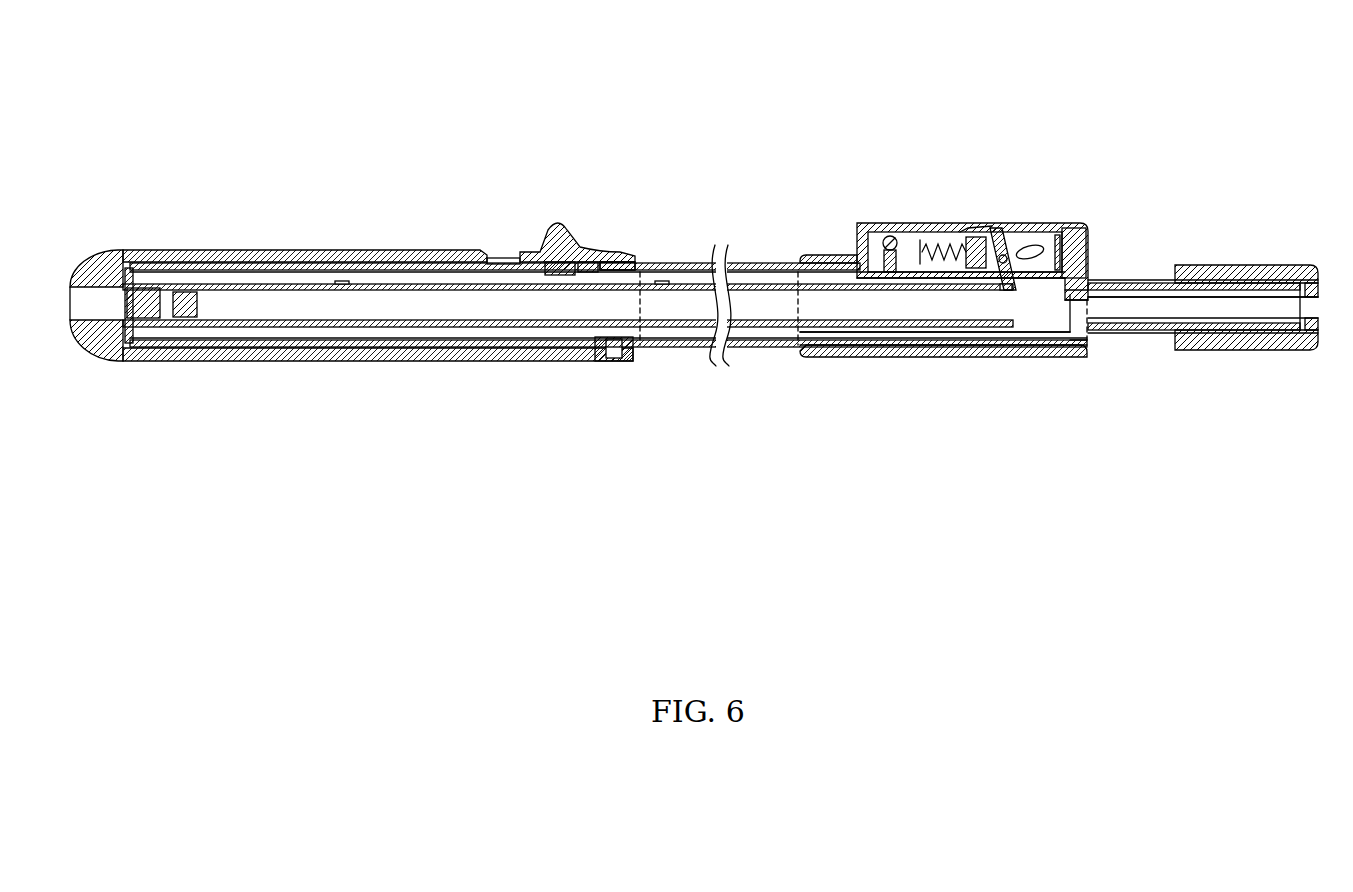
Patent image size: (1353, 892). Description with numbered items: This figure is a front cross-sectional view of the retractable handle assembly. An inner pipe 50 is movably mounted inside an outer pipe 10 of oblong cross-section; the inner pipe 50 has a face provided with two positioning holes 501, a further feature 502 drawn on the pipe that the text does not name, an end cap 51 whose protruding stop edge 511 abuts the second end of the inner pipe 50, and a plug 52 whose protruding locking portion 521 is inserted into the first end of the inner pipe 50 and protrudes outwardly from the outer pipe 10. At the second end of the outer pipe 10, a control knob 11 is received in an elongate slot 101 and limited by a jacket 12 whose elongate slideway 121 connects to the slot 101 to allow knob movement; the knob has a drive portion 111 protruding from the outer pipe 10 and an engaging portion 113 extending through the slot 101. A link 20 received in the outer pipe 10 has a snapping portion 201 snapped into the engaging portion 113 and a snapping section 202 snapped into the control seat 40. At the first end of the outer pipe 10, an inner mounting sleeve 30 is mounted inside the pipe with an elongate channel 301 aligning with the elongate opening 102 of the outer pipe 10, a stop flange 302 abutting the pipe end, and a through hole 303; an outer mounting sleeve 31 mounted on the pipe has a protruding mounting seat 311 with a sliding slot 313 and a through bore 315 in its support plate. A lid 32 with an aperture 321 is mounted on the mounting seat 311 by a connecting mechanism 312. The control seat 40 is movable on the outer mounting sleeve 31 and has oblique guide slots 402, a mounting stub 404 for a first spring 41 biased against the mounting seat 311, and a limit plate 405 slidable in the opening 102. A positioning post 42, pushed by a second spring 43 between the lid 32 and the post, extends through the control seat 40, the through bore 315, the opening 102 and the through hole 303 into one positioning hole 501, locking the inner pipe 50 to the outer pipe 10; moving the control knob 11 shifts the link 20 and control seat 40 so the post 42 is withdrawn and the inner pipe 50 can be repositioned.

The outer pipe 10 is at (670, 354).
The control knob 11 is at (557, 221).
The jacket 12 is at (305, 366).
The link 20 is at (765, 266).
The inner mounting sleeve 30 is at (812, 357).
The outer mounting sleeve 31 is at (808, 255).
The lid 32 is at (1057, 221).
The control seat 40 is at (1068, 232).
The first spring 41 is at (878, 357).
The positioning post 42 is at (1007, 221).
The second spring 43 is at (998, 221).
The inner pipe 50 is at (433, 337).
The end cap 51 is at (147, 326).
The plug 52 is at (1228, 353).
The elongate slot 101 is at (500, 258).
The elongate opening 102 is at (897, 357).
The drive portion 111 is at (593, 265).
The engaging portion 113 is at (590, 275).
The elongate slideway 121 is at (540, 262).
The snapping portion 201 is at (617, 266).
The snapping section 202 is at (985, 357).
The elongate channel 301 is at (843, 357).
The stop flange 302 is at (1090, 335).
The through hole 303 is at (1075, 357).
The mounting seat 311 is at (848, 223).
The connecting mechanism 312 is at (890, 225).
The sliding slot 313 is at (1028, 222).
The through bore 315 is at (1092, 290).
The aperture 321 is at (962, 224).
The oblique guide slot 402 is at (1088, 252).
The mounting stub 404 is at (950, 357).
The limit plate 405 is at (930, 357).
The positioning hole 501 is at (343, 285).
The rod end fitting 502 is at (243, 283).
The stop edge 511 is at (144, 250).
The locking portion 521 is at (1290, 352).